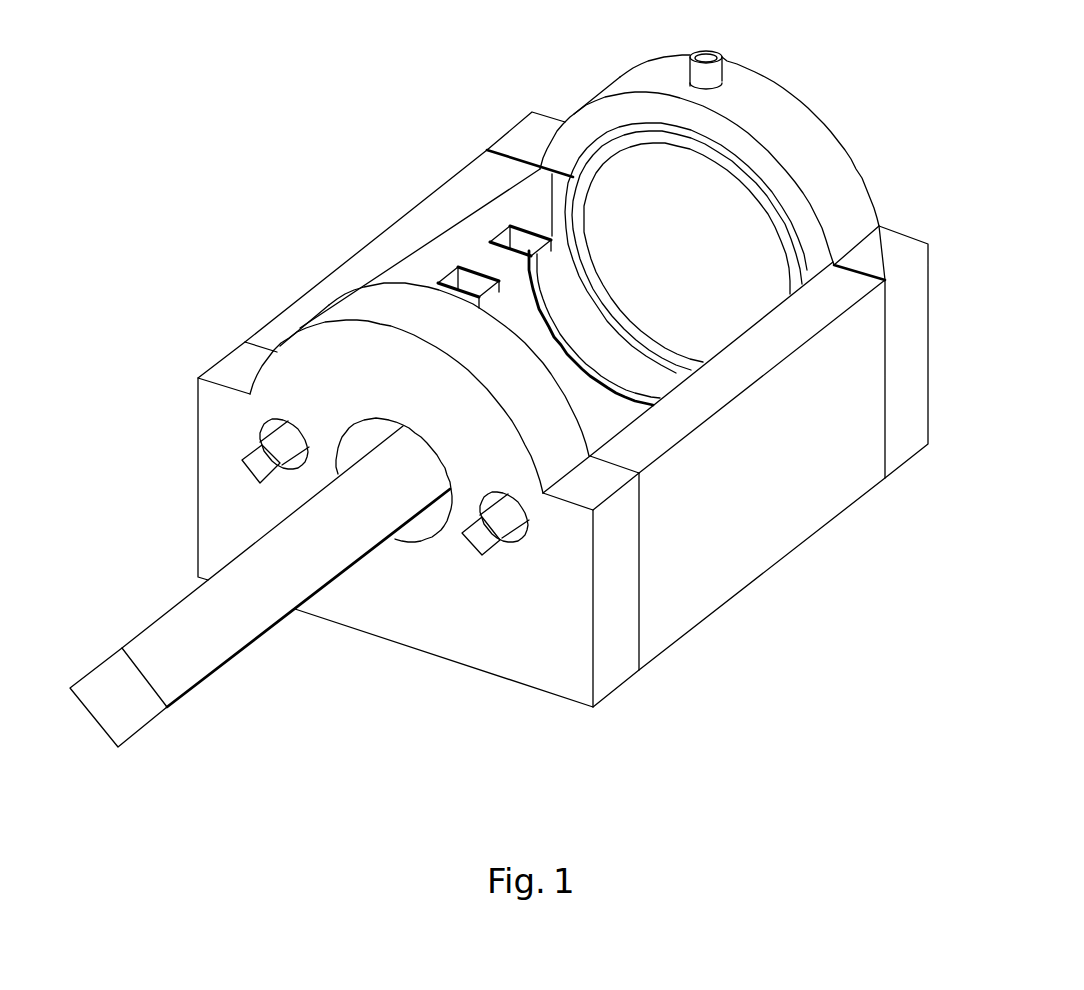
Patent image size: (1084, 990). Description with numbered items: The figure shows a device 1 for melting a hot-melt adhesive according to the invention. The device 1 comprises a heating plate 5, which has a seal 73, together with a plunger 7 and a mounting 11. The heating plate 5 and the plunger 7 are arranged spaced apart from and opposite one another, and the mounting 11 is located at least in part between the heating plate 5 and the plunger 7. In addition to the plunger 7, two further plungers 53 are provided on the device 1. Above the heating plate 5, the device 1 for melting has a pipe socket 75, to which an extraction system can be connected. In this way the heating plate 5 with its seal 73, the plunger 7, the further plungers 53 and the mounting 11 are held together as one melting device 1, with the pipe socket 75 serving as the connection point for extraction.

The device for melting 1 is at (290, 150).
The heating plate 5 is at (690, 264).
The plunger 7 is at (110, 707).
The mounting 11 is at (540, 250).
The further plungers 53 is at (258, 468).
The seal 73 is at (657, 137).
The pipe socket 75 is at (716, 72).